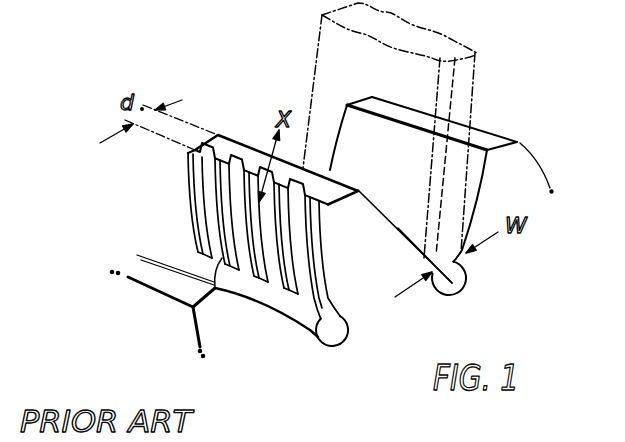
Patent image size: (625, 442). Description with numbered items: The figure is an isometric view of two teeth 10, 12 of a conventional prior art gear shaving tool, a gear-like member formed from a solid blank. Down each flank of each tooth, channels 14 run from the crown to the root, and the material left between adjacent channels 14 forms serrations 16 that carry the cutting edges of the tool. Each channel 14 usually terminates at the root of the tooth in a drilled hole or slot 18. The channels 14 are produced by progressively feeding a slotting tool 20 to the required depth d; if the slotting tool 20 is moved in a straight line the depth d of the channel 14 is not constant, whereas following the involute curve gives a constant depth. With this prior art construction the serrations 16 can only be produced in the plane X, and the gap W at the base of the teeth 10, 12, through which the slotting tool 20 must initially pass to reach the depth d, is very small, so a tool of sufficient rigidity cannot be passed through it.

The tooth 10 is at (518, 138).
The tooth 12 is at (222, 132).
The channel 14 is at (220, 166).
The serration 16 is at (262, 270).
The drilled hole or slot 18 is at (332, 333).
The slotting tool 20 is at (467, 89).